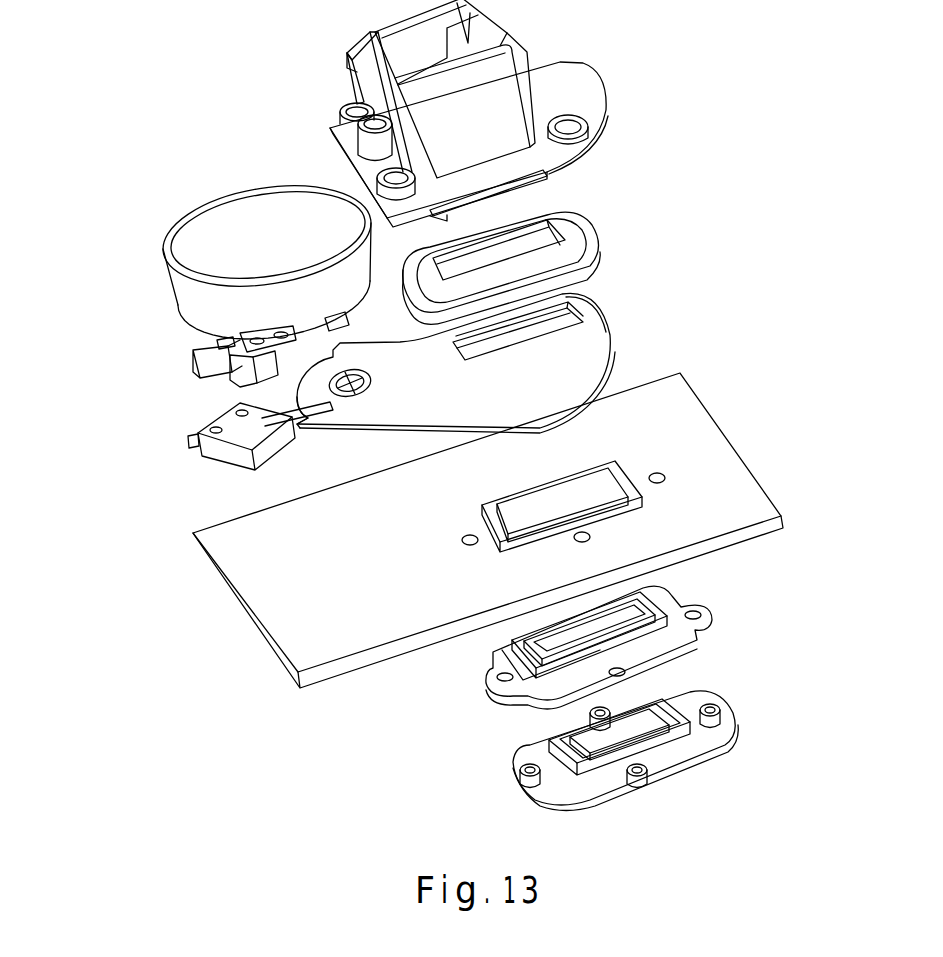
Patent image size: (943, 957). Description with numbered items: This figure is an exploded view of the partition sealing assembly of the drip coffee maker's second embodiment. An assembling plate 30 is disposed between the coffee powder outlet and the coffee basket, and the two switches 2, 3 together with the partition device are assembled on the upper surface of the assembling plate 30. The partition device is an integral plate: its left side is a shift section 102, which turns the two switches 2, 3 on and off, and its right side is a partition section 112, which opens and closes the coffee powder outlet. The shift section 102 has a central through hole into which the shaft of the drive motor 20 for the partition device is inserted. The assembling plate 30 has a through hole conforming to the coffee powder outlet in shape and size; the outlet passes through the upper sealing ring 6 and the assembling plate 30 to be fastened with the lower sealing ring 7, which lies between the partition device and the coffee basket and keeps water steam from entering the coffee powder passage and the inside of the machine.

The drive motor for partition device 20 is at (263, 267).
The switch 2 is at (195, 368).
The switch 3 is at (190, 447).
The upper sealing ring 6 is at (600, 238).
The partition section 112 is at (570, 365).
The shift section 102 is at (299, 430).
The assembling plate 30 is at (357, 623).
The lower sealing ring 7 is at (660, 612).